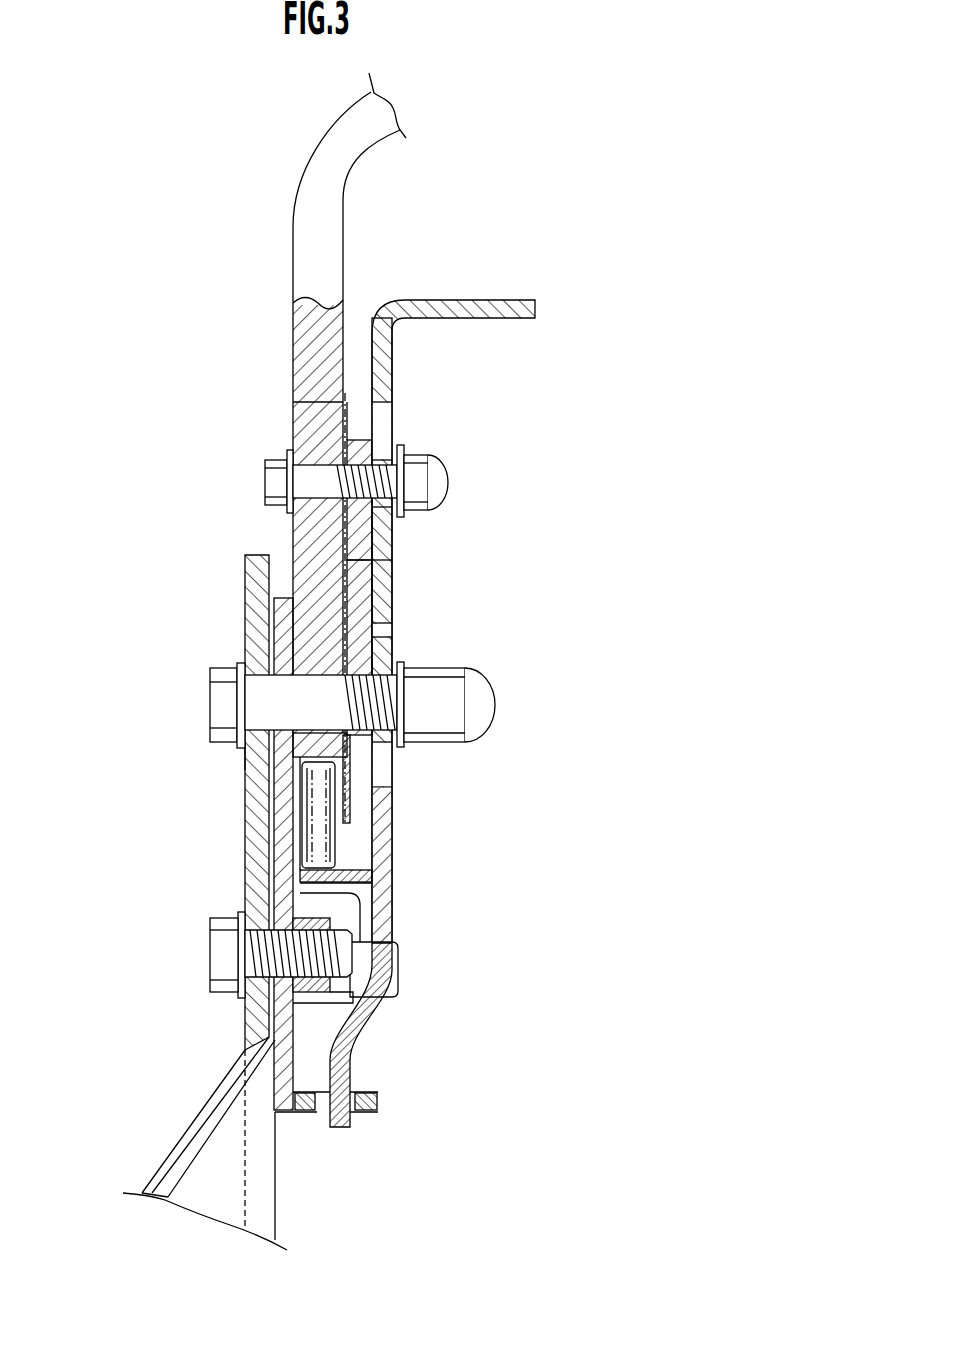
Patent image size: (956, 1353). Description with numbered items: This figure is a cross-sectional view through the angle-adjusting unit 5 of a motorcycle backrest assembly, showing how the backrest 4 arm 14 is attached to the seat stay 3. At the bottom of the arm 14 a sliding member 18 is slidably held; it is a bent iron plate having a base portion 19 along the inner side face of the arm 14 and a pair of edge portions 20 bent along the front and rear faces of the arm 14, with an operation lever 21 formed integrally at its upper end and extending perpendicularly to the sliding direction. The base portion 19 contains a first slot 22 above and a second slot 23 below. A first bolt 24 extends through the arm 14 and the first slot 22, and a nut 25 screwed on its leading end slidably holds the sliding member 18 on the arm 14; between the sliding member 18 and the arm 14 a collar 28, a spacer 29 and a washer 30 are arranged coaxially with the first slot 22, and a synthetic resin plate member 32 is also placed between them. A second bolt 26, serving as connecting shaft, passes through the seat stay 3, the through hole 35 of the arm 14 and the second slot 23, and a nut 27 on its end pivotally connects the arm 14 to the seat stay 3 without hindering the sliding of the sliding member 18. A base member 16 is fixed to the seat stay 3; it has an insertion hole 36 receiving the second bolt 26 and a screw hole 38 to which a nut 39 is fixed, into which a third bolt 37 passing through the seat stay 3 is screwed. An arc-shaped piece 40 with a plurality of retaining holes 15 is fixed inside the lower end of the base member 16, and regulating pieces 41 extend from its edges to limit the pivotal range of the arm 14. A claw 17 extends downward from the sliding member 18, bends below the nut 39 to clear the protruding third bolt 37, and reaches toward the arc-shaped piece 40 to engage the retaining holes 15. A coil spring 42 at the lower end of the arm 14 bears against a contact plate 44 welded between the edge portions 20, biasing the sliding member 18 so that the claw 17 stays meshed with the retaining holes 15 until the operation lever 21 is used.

The seat stay 3 is at (162, 1157).
The backrest 4 is at (288, 170).
The angle-adjusting unit 5 is at (570, 378).
The arm 14 is at (333, 259).
The retaining hole 15 is at (357, 1112).
The base member 16 is at (275, 1037).
The claw 17 is at (349, 1078).
The sliding member 18 is at (395, 588).
The base portion 19 is at (408, 608).
The edge portion 20 is at (372, 838).
The operation lever 21 is at (477, 298).
The first slot 22 is at (382, 425).
The second slot 23 is at (383, 768).
The first bolt 24 is at (264, 470).
The nut 25 is at (449, 476).
The second bolt 26 is at (210, 698).
The nut 27 is at (494, 702).
The collar 28 is at (390, 532).
The spacer 29 is at (360, 556).
The washer 30 is at (295, 513).
The plate member 32 is at (378, 639).
The through hole 35 is at (283, 790).
The insertion hole 36 is at (250, 752).
The third bolt 37 is at (210, 955).
The screw hole 38 is at (280, 942).
The nut 39 is at (303, 1004).
The arc-shaped piece 40 is at (379, 1101).
The regulating piece 41 is at (400, 988).
The coil spring 42 is at (338, 860).
The contact plate 44 is at (352, 884).